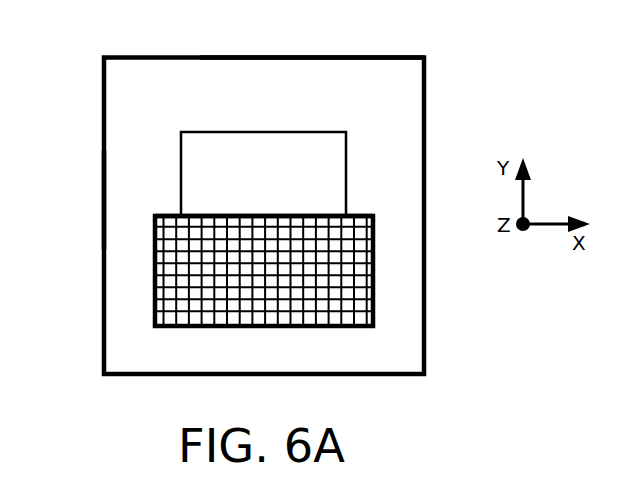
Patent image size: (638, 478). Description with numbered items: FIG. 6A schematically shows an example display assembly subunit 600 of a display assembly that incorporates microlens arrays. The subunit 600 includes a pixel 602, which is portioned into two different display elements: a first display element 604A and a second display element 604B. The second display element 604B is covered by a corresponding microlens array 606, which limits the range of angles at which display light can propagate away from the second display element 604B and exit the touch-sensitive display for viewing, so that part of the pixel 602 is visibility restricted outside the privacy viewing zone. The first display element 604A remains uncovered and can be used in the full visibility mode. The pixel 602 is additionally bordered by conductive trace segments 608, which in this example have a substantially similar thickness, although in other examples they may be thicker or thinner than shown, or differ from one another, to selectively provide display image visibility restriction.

The display assembly subunit 600 is at (119, 33).
The pixel 602 is at (339, 100).
The first display element 604A is at (181, 173).
The second display element 604B is at (243, 340).
The microlens array 606 is at (355, 214).
The conductive trace segments 608 is at (102, 198).